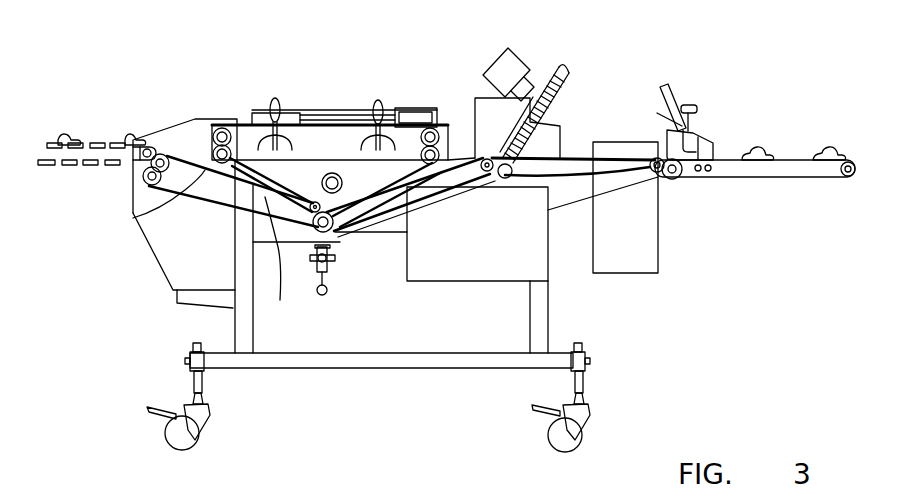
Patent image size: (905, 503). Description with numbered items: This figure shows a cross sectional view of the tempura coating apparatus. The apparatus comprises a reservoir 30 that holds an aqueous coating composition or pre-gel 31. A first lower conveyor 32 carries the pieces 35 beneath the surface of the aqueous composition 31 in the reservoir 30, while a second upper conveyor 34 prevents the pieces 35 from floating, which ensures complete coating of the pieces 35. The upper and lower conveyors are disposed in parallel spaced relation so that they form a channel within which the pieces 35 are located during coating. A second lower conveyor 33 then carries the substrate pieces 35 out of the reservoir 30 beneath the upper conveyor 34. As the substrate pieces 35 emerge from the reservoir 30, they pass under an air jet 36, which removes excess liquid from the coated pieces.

The reservoir 30 is at (330, 228).
The aqueous coating composition 31 is at (265, 196).
The first lower conveyor 32 is at (202, 193).
The second lower conveyor 33 is at (380, 190).
The second upper conveyor 34 is at (346, 192).
The pieces 35 is at (138, 134).
The air jet 36 is at (478, 97).